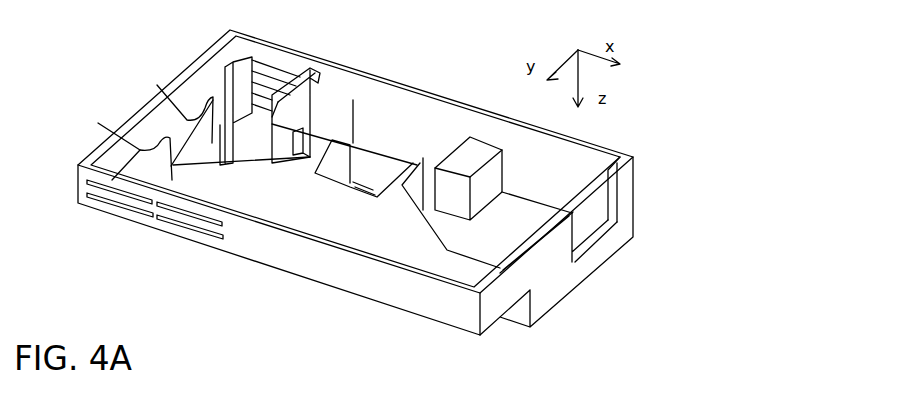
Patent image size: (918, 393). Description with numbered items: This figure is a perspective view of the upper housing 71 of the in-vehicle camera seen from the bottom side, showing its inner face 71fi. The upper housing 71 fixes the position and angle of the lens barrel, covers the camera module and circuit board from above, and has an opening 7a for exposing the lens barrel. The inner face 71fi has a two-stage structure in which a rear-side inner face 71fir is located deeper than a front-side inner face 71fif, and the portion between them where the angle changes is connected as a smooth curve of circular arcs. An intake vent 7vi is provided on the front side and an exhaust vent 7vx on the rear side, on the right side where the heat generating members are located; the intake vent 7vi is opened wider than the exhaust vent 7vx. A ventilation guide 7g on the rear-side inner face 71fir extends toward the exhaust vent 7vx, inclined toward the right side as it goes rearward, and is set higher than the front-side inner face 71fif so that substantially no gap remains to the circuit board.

The upper housing 71 is at (255, 252).
The intake vent 7vi is at (147, 220).
The exhaust vent 7vx is at (298, 70).
The ventilation guide 7g is at (272, 97).
The opening 7a is at (360, 183).
The inner face 71fi is at (22, 100).
The rear-side inner face 71fir is at (161, 100).
The front-side inner face 71fif is at (104, 138).